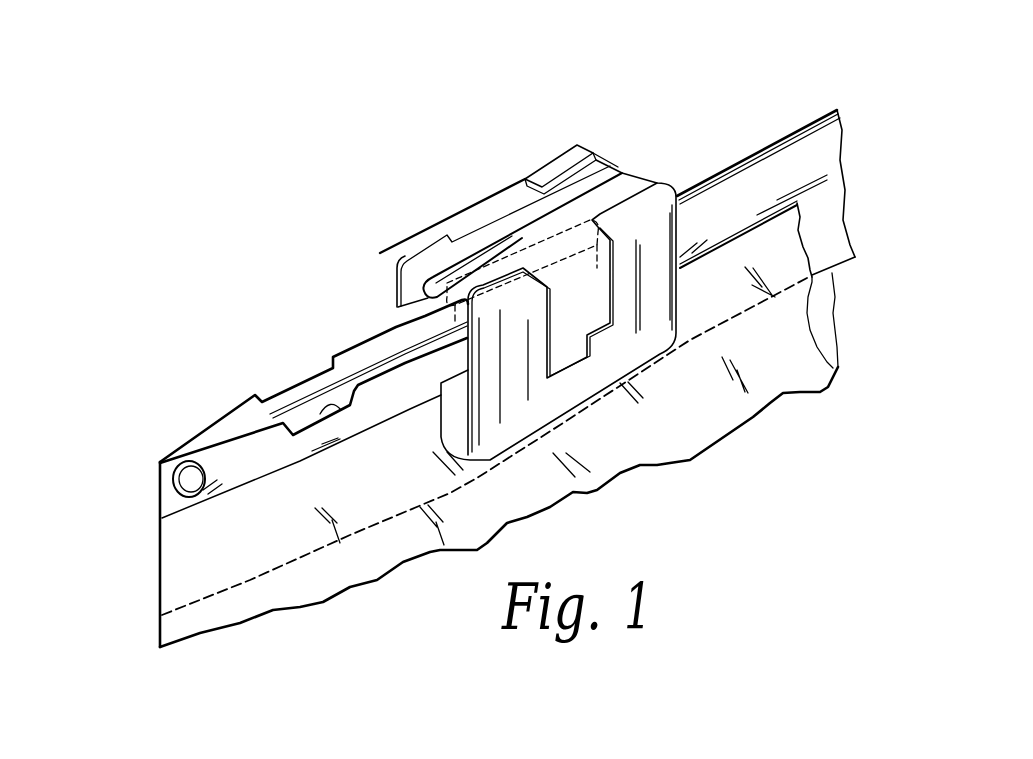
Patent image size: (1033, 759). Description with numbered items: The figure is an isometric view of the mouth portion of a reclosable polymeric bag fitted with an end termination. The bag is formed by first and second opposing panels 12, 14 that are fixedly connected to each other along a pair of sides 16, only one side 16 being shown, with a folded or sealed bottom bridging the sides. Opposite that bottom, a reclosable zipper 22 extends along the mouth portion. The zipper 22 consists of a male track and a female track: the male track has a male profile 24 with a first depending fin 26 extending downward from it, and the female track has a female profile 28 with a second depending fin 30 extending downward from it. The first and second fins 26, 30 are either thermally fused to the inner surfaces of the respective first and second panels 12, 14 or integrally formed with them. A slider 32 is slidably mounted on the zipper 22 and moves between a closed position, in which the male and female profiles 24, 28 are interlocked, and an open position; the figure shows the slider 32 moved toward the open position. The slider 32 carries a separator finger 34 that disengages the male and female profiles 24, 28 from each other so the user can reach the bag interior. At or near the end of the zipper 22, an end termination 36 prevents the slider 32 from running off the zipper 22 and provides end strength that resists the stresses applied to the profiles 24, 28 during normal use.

The first panel 12 is at (808, 350).
The second panel 14 is at (822, 310).
The side 16 is at (159, 630).
The zipper 22 is at (762, 134).
The male profile 24 is at (380, 398).
The first fin 26 is at (832, 242).
The female profile 28 is at (305, 400).
The second fin 30 is at (348, 410).
The slider 32 is at (485, 225).
The separator finger 34 is at (530, 250).
The end termination 36 is at (186, 484).